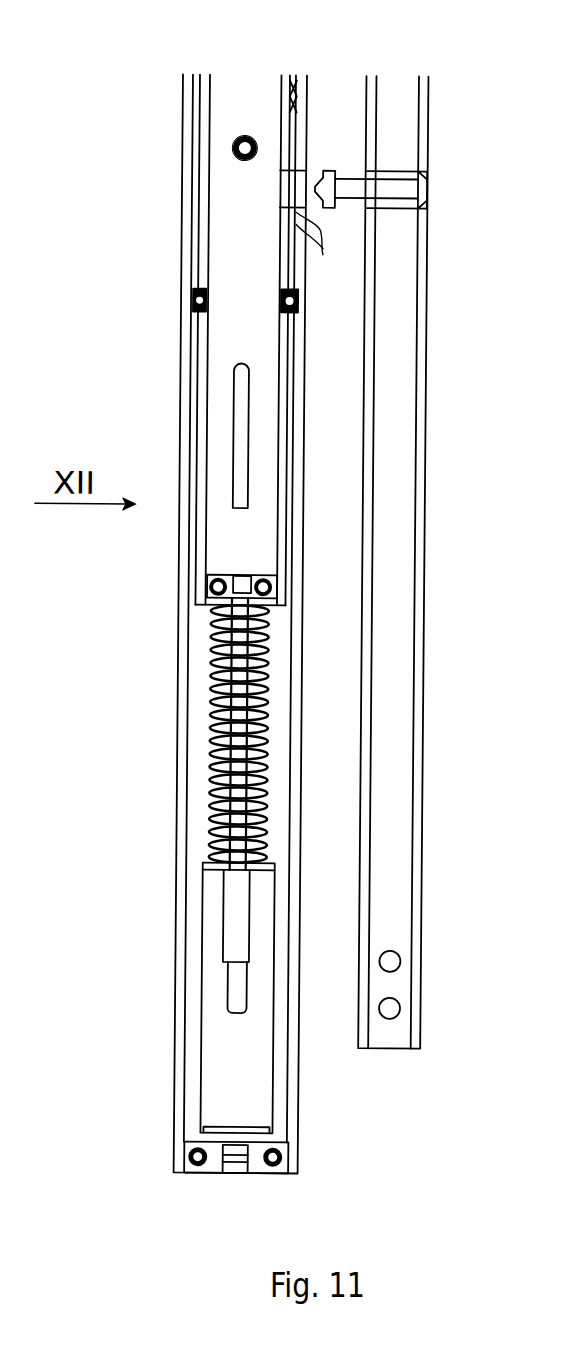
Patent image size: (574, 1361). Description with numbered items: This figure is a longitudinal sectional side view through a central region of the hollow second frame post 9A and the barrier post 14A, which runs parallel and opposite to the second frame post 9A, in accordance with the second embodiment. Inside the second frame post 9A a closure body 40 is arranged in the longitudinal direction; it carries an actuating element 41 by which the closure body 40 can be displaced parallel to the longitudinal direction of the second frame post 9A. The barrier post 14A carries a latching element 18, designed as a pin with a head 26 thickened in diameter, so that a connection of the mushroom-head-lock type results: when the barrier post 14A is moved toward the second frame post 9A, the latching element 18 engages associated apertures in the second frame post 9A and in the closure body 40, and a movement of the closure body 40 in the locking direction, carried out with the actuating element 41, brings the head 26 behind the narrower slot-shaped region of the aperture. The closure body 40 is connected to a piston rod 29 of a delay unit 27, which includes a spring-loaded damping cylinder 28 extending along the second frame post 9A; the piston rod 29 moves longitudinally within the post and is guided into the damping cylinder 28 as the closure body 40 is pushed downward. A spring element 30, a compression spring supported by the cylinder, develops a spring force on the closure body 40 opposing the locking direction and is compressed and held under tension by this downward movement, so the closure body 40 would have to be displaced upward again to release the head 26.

The second frame post 9A is at (178, 195).
The barrier post 14A is at (425, 303).
The latching element 18 is at (348, 173).
The head 26 is at (311, 168).
The delay unit 27 is at (278, 990).
The damping cylinder 28 is at (214, 1070).
The piston rod 29 is at (232, 578).
The spring element 30 is at (218, 813).
The closure body 40 is at (214, 453).
The actuating element 41 is at (236, 365).